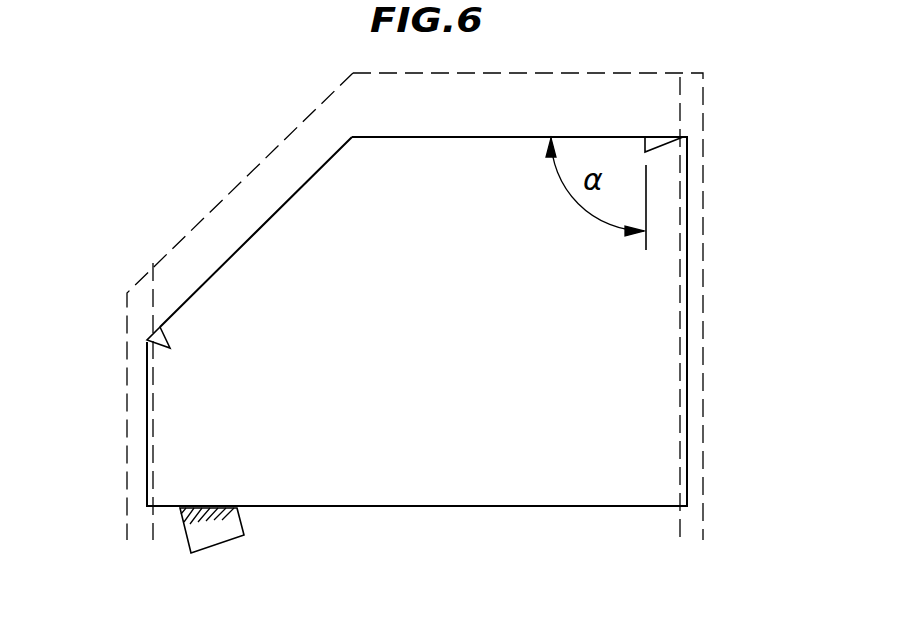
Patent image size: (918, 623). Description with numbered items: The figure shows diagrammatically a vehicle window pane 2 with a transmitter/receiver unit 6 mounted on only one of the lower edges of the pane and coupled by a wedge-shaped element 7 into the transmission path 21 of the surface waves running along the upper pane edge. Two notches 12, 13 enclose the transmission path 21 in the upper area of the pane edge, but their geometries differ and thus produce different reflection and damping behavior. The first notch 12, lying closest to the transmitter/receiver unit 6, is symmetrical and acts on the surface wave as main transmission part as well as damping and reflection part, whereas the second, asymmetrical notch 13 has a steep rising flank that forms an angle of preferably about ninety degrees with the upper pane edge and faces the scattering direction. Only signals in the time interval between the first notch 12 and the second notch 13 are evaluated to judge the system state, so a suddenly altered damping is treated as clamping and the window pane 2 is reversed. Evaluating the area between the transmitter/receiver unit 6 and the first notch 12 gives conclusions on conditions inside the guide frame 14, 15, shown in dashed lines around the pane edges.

The window pane 2 is at (415, 175).
The transmission path 21 is at (486, 137).
The second notch 13 is at (655, 142).
The first notch 12 is at (157, 337).
The guide frame 15 is at (703, 127).
The guide frame 14 is at (135, 422).
The wedge-shaped element 7 is at (183, 510).
The transmitter/receiver unit 6 is at (240, 528).